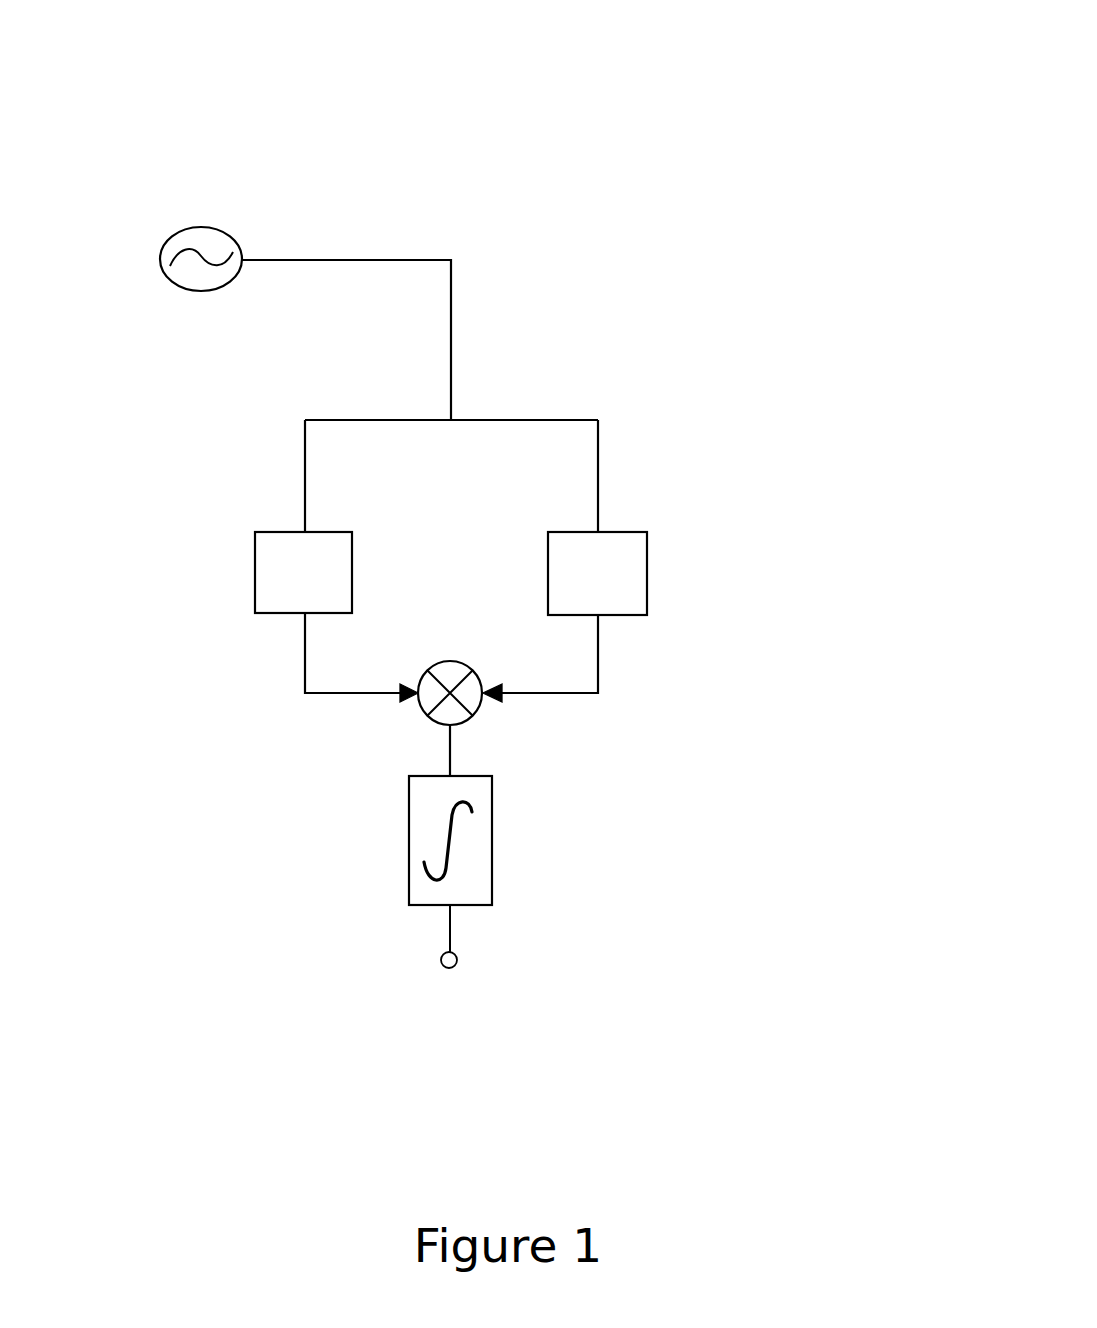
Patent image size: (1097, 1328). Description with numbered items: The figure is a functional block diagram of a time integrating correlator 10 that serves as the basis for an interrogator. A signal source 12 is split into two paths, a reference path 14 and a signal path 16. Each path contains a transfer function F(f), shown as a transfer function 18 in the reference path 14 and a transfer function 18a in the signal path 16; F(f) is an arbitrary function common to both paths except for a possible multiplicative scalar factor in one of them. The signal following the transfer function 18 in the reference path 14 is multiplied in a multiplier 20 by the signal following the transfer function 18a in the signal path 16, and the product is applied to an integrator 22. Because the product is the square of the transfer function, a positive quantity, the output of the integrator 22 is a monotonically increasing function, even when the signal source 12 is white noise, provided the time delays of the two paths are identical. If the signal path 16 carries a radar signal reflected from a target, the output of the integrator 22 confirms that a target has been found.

The correlator 10 is at (651, 203).
The signal source 12 is at (183, 223).
The reference path 14 is at (300, 472).
The signal path 16 is at (608, 455).
The transfer function F(f) 18 is at (246, 575).
The transfer function F(f) 18a is at (656, 575).
The multiplier 20 is at (420, 718).
The integrator 22 is at (496, 861).